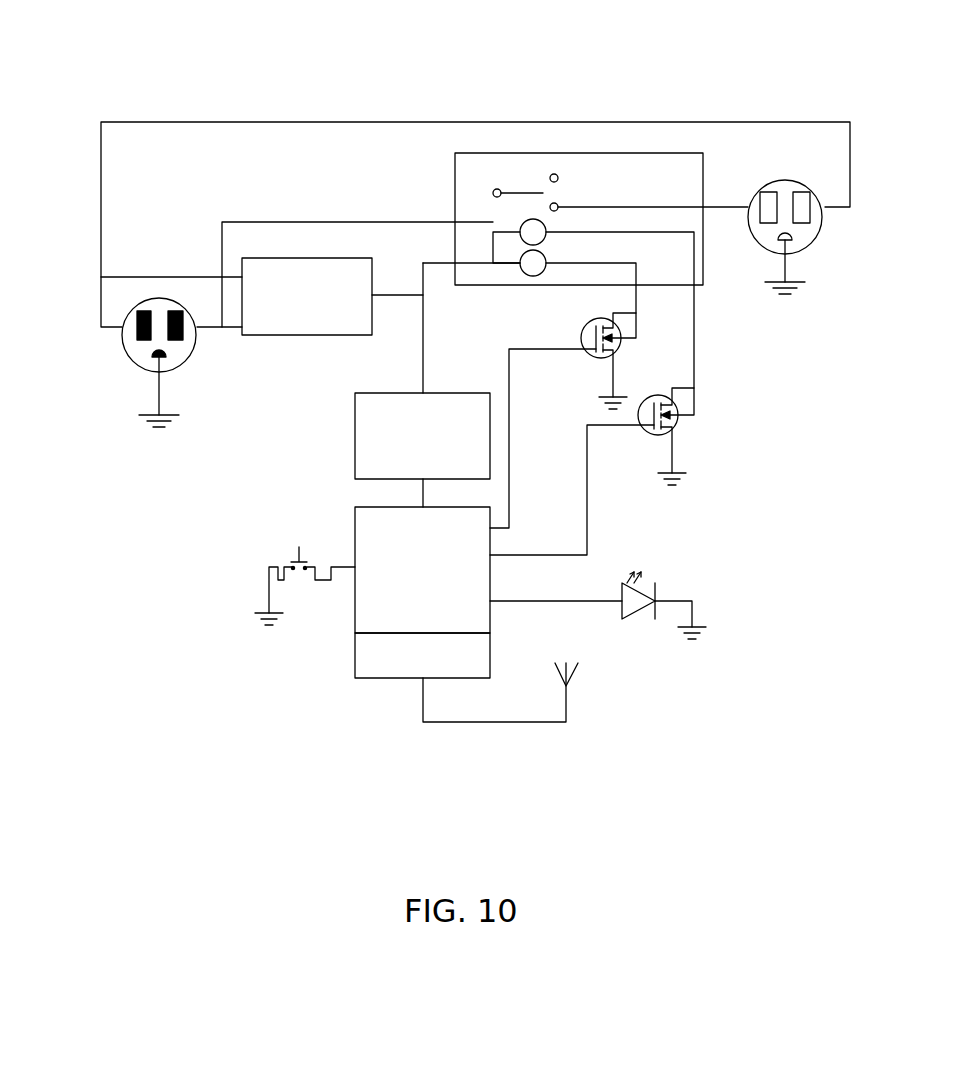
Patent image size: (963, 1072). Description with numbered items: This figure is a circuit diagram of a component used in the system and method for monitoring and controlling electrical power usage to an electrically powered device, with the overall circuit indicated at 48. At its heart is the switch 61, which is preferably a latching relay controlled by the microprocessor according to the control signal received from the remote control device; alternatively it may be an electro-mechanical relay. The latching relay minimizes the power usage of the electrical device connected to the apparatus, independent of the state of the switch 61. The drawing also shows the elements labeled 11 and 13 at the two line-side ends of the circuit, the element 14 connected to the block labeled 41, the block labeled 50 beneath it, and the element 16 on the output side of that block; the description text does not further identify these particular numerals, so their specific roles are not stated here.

The plug-in power control device circuit 48 is at (134, 64).
The switch 61 is at (530, 153).
The receptacle outlet 11 is at (820, 262).
The plug 13 is at (105, 370).
The push button switch 14 is at (283, 543).
The microcontroller unit (MCU) 41 is at (355, 618).
The radio transceiver 50 is at (355, 665).
The LED indicator 16 is at (707, 603).